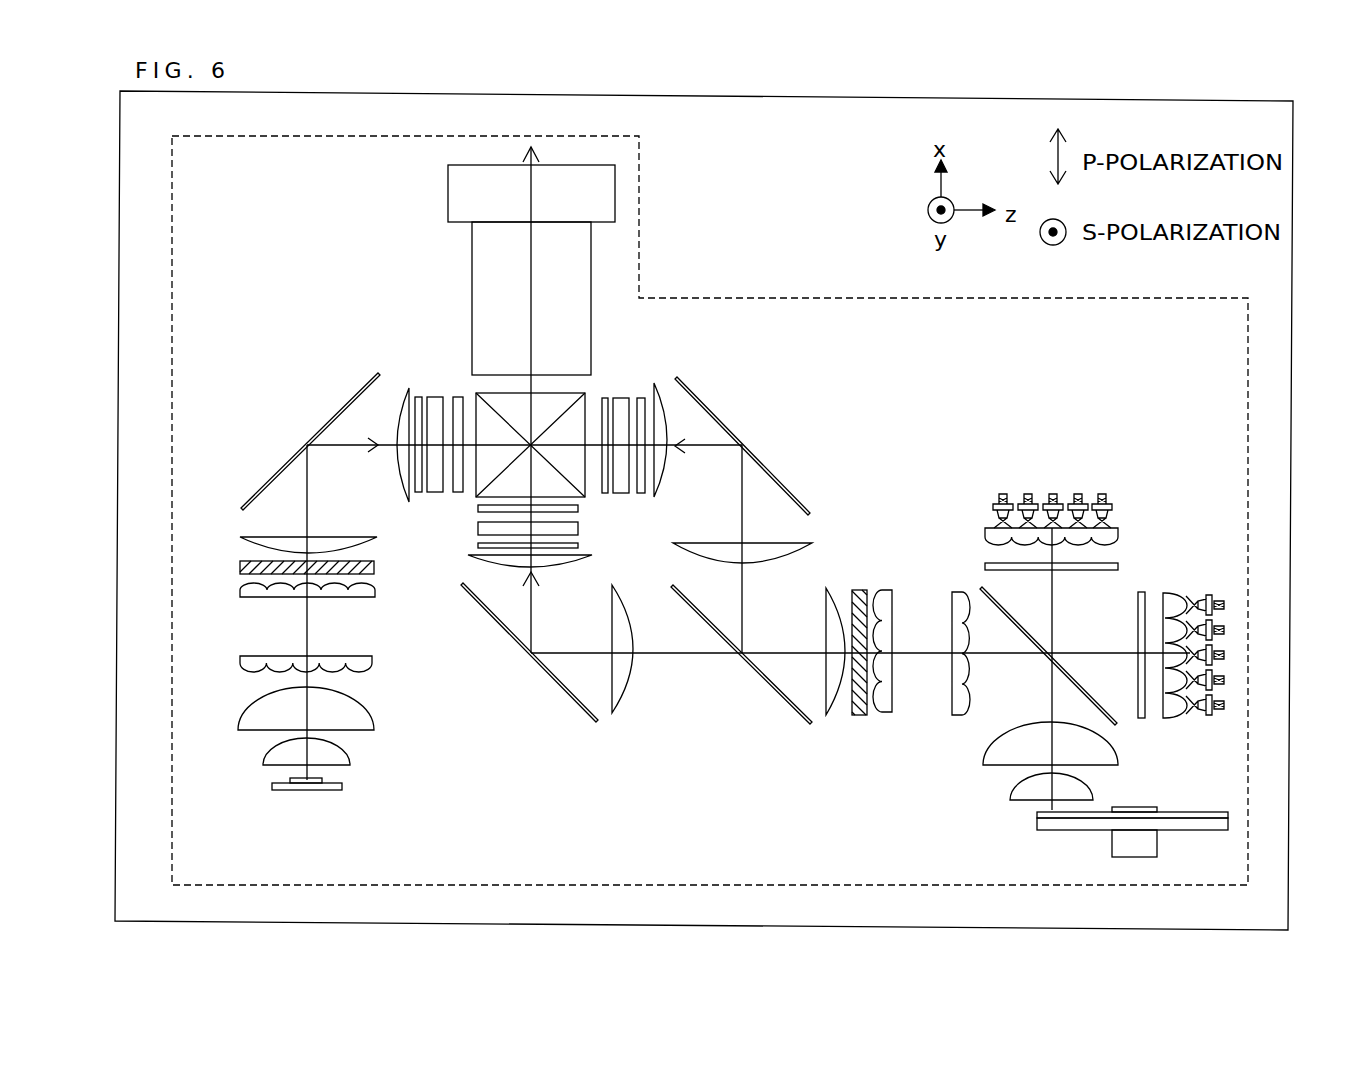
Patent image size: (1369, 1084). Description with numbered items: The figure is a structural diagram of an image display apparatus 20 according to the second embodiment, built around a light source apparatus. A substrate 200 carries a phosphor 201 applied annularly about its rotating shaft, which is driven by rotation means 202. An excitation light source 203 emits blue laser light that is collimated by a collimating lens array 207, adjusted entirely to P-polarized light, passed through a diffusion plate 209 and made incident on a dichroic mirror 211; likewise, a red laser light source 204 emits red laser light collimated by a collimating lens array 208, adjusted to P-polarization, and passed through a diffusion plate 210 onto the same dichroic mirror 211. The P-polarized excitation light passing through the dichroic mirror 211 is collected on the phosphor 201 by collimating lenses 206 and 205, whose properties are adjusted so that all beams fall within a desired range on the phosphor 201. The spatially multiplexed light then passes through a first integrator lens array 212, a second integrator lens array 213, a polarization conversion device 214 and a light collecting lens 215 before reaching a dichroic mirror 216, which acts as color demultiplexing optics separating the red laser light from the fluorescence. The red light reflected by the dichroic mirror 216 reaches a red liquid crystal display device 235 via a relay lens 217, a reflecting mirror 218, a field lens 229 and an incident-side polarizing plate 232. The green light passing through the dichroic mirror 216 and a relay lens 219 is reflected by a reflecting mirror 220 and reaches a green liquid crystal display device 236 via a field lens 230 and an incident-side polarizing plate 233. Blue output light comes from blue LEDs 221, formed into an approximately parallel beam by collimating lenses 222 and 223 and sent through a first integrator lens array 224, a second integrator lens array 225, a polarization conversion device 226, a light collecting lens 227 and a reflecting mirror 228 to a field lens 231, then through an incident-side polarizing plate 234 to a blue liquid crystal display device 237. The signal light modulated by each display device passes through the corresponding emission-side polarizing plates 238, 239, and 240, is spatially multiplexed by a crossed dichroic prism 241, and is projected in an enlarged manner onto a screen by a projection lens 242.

The image display apparatus 20 is at (823, 298).
The substrate 200 is at (1037, 828).
The phosphor 201 is at (1037, 815).
The rotation means 202 is at (1112, 845).
The excitation light source 203 is at (1048, 495).
The red laser light source 204 is at (1207, 600).
The collimating lens 205 is at (1093, 792).
The collimating lens 206 is at (1118, 760).
The collimating lens array 207 is at (990, 525).
The collimating lens array 208 is at (1177, 593).
The diffusion plate 209 is at (984, 563).
The diffusion plate 210 is at (1142, 592).
The dichroic mirror 211 is at (982, 587).
The first integrator lens array 212 is at (963, 717).
The second integrator lens array 213 is at (882, 712).
The polarization conversion device 214 is at (858, 717).
The light collecting lens 215 is at (827, 715).
The dichroic mirror 216 is at (777, 683).
The relay lens 217 is at (733, 558).
The reflecting mirror 218 is at (718, 412).
The relay lens 219 is at (617, 713).
The reflecting mirror 220 is at (555, 678).
The blue LEDs 221 is at (338, 788).
The collimating lens 222 is at (350, 763).
The collimating lens 223 is at (370, 725).
The first integrator lens array 224 is at (365, 662).
The second integrator lens array 225 is at (245, 595).
The polarization conversion device 226 is at (245, 565).
The light collecting lens 227 is at (244, 541).
The reflecting mirror 228 is at (290, 452).
The field lens 229 is at (665, 397).
The field lens 230 is at (503, 565).
The field lens 231 is at (407, 403).
The incident-side polarizing plate 232 is at (640, 395).
The incident-side polarizing plate 233 is at (580, 545).
The incident-side polarizing plate 234 is at (418, 395).
The red liquid crystal display device 235 is at (628, 395).
The green liquid crystal display device 236 is at (580, 527).
The blue liquid crystal display device 237 is at (432, 395).
The emission-side polarizing plate 238 is at (603, 395).
The emission-side polarizing plate 239 is at (483, 505).
The emission-side polarizing plate 240 is at (455, 395).
The crossed dichroic prism 241 is at (480, 495).
The projection lens 242 is at (615, 195).